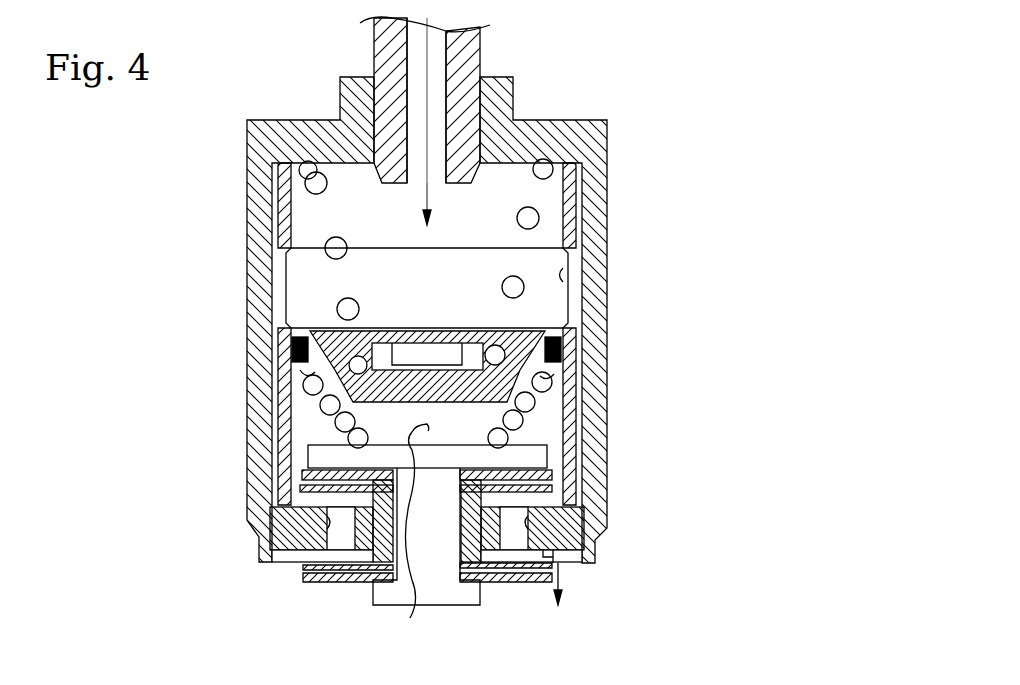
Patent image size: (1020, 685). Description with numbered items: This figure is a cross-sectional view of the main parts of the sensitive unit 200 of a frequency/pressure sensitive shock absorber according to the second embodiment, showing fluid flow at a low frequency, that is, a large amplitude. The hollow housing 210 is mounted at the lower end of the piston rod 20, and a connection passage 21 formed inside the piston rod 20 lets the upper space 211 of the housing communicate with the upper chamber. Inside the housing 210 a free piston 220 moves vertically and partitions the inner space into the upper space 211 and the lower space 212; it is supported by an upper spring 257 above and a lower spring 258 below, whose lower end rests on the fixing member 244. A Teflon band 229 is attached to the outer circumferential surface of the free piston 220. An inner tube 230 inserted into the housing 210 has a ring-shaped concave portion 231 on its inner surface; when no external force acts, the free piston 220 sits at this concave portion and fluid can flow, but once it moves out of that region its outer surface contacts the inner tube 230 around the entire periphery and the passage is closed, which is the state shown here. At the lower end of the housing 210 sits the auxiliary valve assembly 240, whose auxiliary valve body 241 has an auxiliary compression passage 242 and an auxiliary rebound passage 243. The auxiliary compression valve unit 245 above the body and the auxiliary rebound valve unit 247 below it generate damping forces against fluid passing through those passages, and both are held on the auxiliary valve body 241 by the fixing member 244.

The piston rod 20 is at (382, 40).
The connection passage 21 is at (437, 63).
The sensitive unit 200 is at (664, 175).
The housing 210 is at (596, 145).
The upper space 211 is at (465, 198).
The lower space 212 is at (400, 533).
The free piston 220 is at (520, 378).
The Teflon band 229 is at (293, 357).
The inner tube 230 is at (283, 267).
The ring-shaped concave portion 231 is at (562, 275).
The auxiliary valve assembly 240 is at (577, 597).
The auxiliary valve body 241 is at (545, 557).
The auxiliary compression passage 242 is at (330, 522).
The auxiliary rebound passage 243 is at (538, 518).
The fixing member 244 is at (440, 598).
The auxiliary compression valve unit 245 is at (340, 470).
The auxiliary rebound valve unit 247 is at (298, 578).
The upper spring 257 is at (312, 183).
The lower spring 258 is at (308, 388).